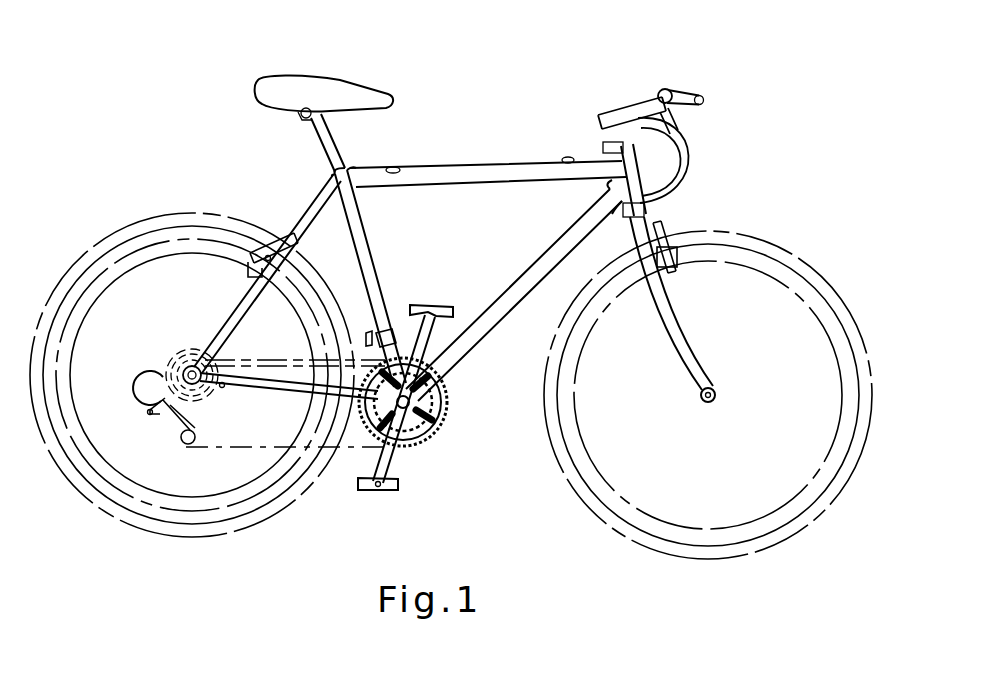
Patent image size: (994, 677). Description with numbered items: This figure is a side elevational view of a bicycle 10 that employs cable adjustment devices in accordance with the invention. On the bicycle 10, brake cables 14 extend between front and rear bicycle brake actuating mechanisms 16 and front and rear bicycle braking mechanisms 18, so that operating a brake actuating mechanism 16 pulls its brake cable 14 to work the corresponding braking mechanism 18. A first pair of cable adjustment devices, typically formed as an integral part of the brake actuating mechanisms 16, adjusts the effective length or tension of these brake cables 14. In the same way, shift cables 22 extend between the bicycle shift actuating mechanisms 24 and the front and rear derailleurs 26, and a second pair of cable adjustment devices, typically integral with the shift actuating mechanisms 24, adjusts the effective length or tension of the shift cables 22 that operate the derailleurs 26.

The bicycle 10 is at (641, 55).
The brake cables 14 is at (470, 166).
The brake actuating mechanisms 16 is at (699, 86).
The braking mechanisms 18 is at (278, 232).
The shift cables 22 is at (683, 180).
The shift actuating mechanisms 24 is at (648, 107).
The derailleurs 26 is at (383, 343).